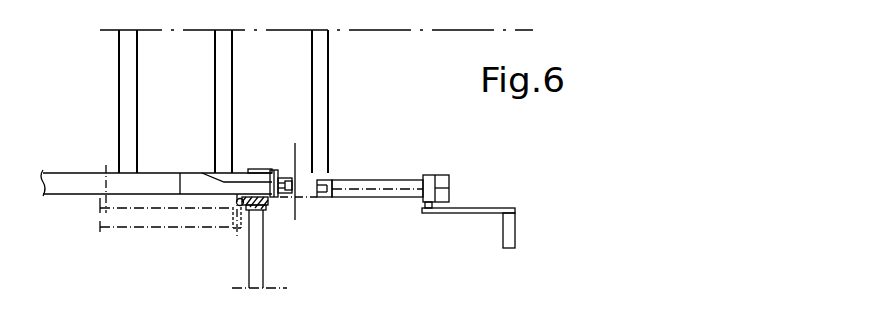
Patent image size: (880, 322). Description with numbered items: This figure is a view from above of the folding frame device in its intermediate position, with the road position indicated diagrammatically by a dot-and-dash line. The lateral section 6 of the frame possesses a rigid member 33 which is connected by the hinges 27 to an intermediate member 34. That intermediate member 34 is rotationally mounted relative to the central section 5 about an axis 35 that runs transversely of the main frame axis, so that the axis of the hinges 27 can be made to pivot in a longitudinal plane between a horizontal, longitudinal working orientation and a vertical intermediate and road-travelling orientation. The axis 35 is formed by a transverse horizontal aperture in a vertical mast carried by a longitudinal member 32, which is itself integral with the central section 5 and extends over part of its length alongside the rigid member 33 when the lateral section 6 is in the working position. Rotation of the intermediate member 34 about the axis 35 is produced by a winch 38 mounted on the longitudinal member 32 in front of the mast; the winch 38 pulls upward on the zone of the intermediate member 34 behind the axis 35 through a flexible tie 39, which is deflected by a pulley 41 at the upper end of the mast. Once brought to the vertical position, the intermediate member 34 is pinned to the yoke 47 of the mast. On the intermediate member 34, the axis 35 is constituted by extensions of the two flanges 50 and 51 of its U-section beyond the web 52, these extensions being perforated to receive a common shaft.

The central section 5 is at (331, 80).
The lateral section 6 is at (133, 216).
The hinges 27 is at (236, 198).
The longitudinal member 32 is at (162, 180).
The rigid member 33 is at (249, 240).
The intermediate member 34 is at (250, 170).
The axis 35 is at (299, 153).
The winch 38 is at (440, 176).
The flexible tie 39 is at (385, 198).
The pulley 41 is at (330, 197).
The yoke 47 is at (283, 178).
The flange 50 is at (258, 170).
The flange 51 is at (268, 201).
The web 52 is at (213, 178).